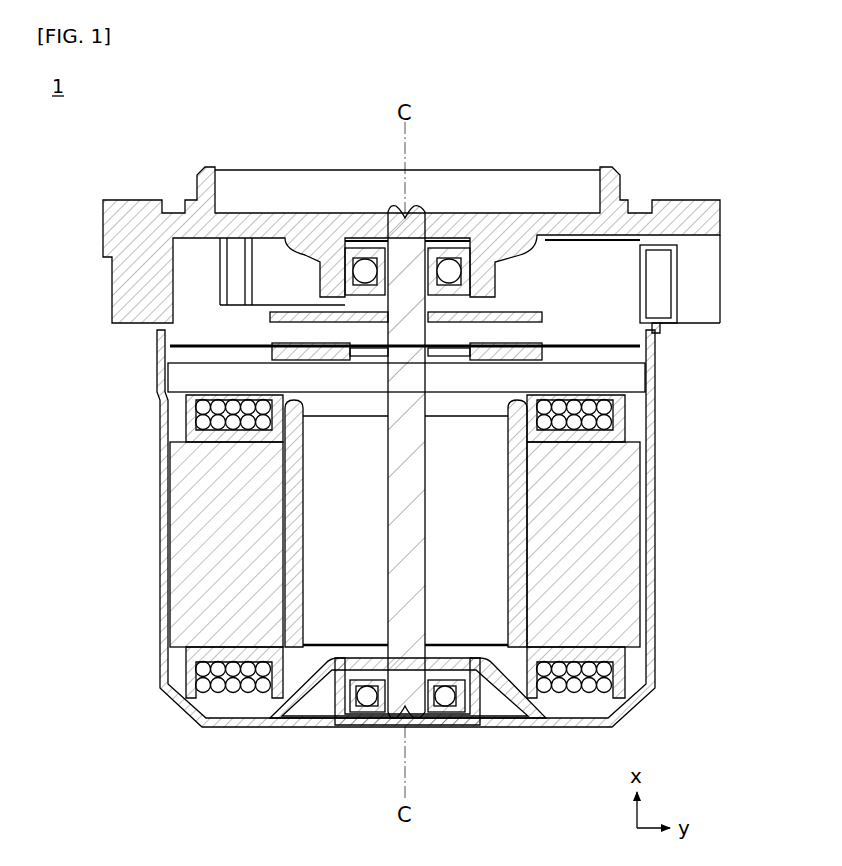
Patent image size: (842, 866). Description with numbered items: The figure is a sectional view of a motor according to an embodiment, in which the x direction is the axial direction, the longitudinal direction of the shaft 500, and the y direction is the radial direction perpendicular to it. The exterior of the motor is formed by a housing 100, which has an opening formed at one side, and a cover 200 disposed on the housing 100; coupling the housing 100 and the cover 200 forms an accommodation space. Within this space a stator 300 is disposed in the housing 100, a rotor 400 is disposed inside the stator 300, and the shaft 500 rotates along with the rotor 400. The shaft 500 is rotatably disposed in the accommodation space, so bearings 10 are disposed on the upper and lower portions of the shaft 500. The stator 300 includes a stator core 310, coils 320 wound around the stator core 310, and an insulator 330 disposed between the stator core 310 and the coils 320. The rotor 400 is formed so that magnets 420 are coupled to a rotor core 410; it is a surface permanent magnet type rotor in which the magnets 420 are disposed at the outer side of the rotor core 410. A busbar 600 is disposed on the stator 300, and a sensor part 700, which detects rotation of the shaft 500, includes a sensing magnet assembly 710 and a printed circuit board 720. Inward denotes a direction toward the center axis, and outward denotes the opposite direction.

The bearings 10 is at (468, 250).
The housing 100 is at (158, 350).
The cover 200 is at (103, 242).
The stator 300 is at (477, 546).
The stator core 310 is at (625, 478).
The coils 320 is at (612, 408).
The insulator 330 is at (625, 436).
The rotor 400 is at (283, 523).
The rotor core 410 is at (330, 478).
The magnets 420 is at (296, 525).
The shaft 500 is at (398, 582).
The busbar 600 is at (172, 383).
The sensor part 700 is at (522, 344).
The sensing magnet assembly 710 is at (548, 340).
The printed circuit board 720 is at (548, 314).